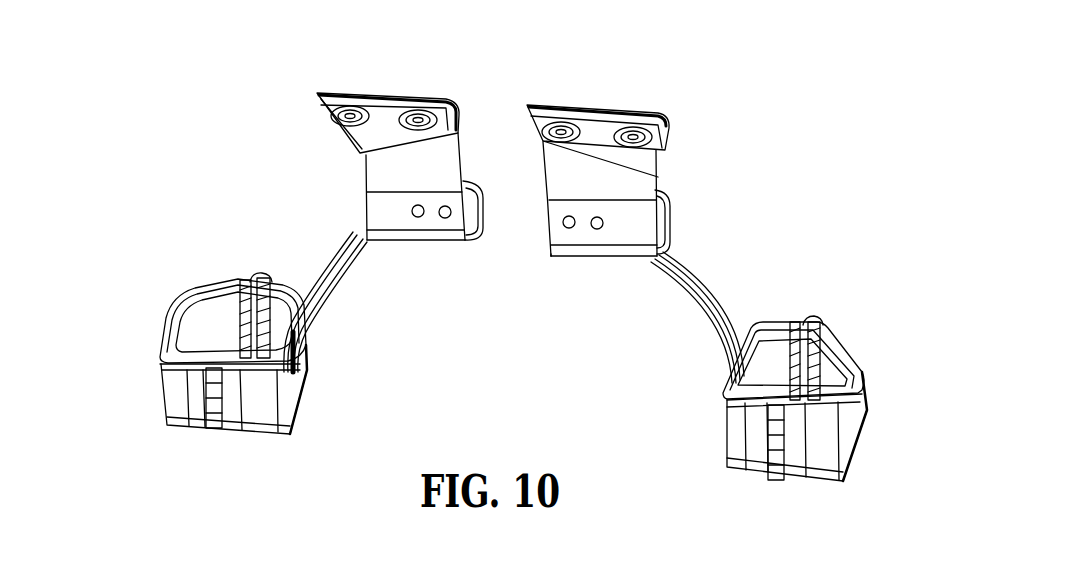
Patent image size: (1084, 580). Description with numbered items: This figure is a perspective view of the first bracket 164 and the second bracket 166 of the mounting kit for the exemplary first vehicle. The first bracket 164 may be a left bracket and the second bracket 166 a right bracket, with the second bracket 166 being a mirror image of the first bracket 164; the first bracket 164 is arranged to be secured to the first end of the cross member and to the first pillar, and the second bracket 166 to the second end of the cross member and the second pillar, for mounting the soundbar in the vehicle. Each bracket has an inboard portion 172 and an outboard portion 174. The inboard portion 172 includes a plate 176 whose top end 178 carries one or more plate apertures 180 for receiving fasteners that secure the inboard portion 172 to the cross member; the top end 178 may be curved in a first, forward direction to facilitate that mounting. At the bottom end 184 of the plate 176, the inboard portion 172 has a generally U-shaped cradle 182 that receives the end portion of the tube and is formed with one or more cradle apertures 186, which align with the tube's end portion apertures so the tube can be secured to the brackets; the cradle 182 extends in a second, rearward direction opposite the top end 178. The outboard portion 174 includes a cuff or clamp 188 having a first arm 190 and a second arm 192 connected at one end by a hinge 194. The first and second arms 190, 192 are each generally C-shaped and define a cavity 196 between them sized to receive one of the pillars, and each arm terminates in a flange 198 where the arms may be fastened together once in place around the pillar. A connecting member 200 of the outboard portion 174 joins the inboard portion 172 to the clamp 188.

The first bracket 164 is at (243, 160).
The second bracket 166 is at (838, 226).
The inboard portion 172 is at (312, 70).
The outboard portion 174 is at (172, 452).
The plate 176 is at (398, 168).
The top end 178 is at (383, 98).
The plate apertures 180 is at (340, 124).
The cradle 182 is at (386, 213).
The bottom end 184 is at (408, 245).
The cradle apertures 186 is at (566, 225).
The clamp 188 is at (144, 368).
The first arm 190 is at (170, 312).
The second arm 192 is at (300, 398).
The hinge 194 is at (215, 428).
The cavity 196 is at (220, 320).
The flange 198 is at (258, 275).
The connecting member 200 is at (312, 288).